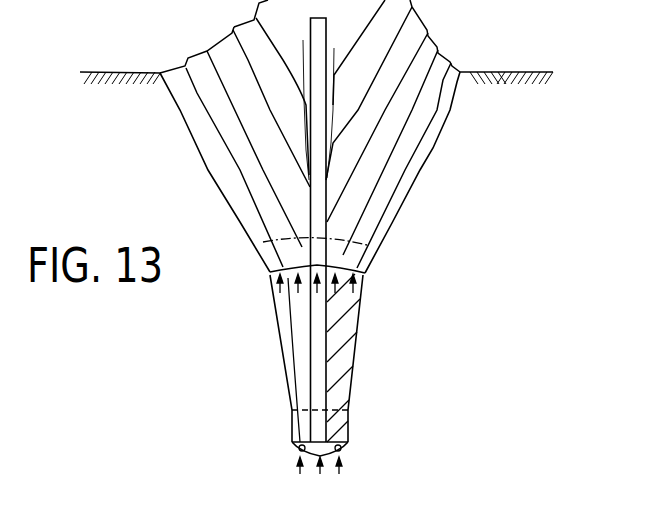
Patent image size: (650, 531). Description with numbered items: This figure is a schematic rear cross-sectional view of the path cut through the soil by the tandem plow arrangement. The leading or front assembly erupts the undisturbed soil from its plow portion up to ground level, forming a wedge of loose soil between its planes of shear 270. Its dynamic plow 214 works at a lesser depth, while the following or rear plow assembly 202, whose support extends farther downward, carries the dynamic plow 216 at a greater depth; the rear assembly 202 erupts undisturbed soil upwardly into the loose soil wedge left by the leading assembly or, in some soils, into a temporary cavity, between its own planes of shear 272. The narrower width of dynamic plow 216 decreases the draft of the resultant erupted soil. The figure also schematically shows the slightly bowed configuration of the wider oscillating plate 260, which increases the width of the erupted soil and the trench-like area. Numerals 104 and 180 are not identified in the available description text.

The ground surface 104 is at (14, 1).
The upper soil layer 180 is at (207, 0).
The rear plow assembly 202 is at (327, 197).
The dynamic plow 214 is at (349, 226).
The dynamic plow 216 is at (341, 431).
The oscillating plate 260 is at (365, 267).
The planes of shear 270 is at (211, 193).
The planes of shear 272 is at (267, 336).